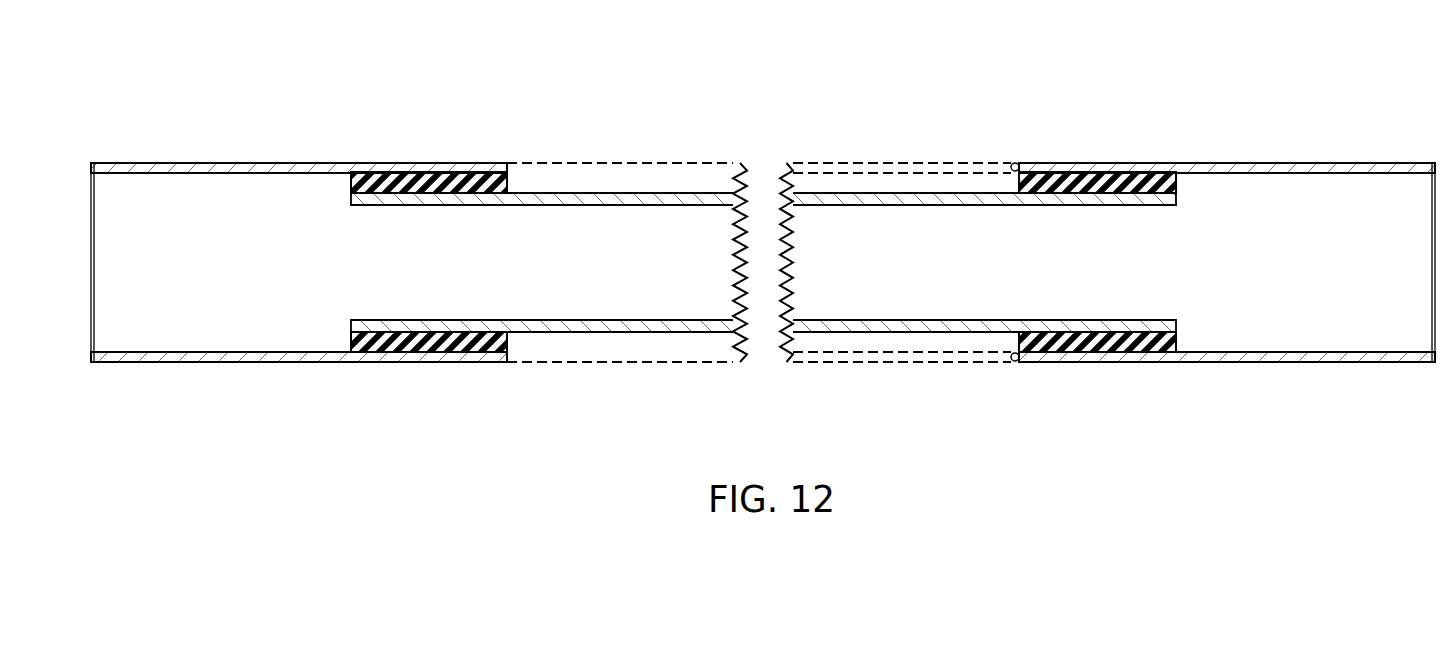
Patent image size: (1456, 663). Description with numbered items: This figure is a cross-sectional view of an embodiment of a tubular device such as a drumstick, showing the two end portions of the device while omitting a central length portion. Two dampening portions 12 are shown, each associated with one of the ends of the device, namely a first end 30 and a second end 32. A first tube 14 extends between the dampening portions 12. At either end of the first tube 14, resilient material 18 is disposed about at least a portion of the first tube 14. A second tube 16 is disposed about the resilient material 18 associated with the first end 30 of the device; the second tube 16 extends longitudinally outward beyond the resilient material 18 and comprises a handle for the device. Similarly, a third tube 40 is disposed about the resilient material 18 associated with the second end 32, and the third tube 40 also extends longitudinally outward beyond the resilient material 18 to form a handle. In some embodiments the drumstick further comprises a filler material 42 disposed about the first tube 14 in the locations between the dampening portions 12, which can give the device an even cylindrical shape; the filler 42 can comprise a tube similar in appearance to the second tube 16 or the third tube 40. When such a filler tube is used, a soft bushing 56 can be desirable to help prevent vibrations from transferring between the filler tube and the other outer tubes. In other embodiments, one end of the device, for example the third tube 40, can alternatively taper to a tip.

The dampening portion 12 is at (770, 102).
The first tube 14 is at (617, 193).
The second tube 16 is at (172, 362).
The resilient material 18 is at (438, 352).
The first end 30 is at (300, 445).
The second end 32 is at (1225, 445).
The third tube 40 is at (1354, 362).
The filler material 42 is at (614, 362).
The soft bushing 56 is at (1015, 362).